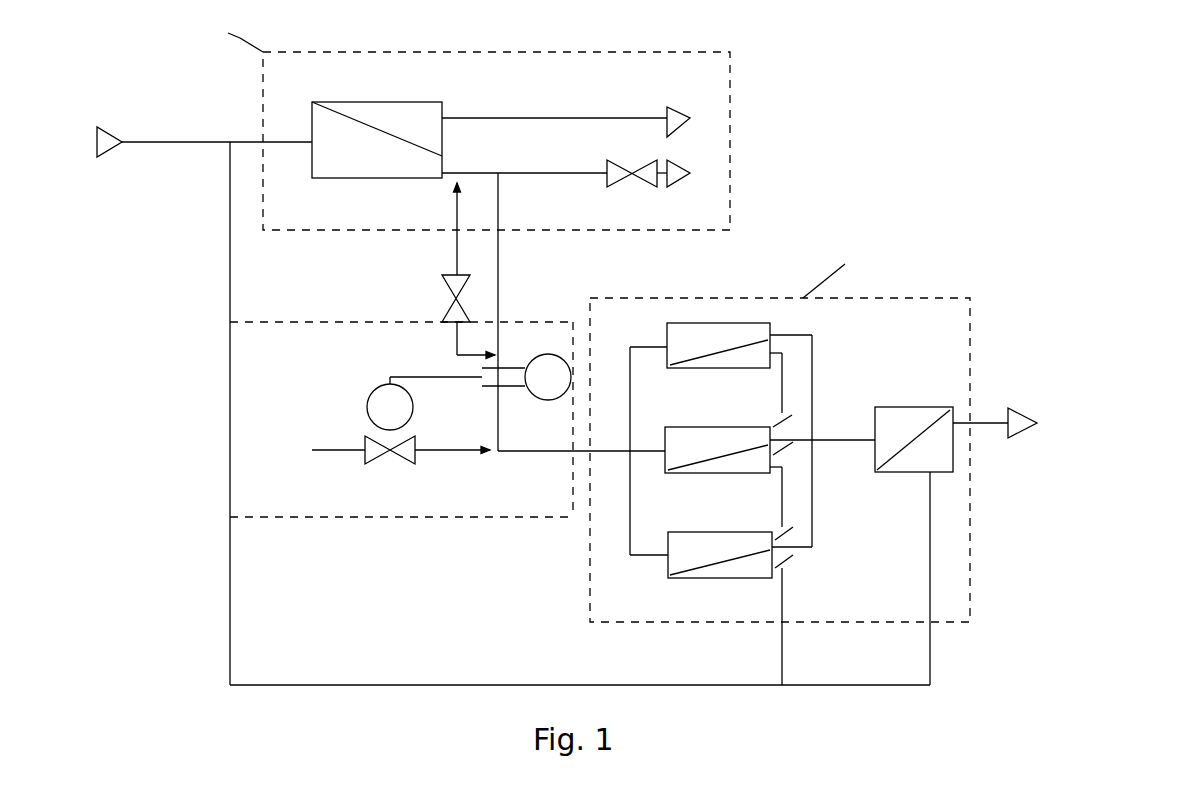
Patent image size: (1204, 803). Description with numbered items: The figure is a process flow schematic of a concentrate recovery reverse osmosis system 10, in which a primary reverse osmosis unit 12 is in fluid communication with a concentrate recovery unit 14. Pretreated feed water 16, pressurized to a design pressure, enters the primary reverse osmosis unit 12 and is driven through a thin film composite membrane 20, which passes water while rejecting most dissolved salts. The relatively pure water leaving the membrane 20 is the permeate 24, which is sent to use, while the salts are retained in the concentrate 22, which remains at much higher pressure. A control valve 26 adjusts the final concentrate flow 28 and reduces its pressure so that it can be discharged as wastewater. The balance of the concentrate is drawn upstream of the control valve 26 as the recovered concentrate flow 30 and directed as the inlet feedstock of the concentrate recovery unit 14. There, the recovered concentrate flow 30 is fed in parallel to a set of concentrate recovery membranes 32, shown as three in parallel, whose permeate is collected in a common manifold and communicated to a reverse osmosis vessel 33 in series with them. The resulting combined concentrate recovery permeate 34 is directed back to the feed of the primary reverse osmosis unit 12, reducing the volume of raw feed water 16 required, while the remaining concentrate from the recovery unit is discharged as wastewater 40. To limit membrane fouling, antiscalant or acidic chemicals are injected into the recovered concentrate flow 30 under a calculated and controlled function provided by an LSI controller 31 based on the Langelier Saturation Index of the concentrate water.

The concentrate recovery reverse osmosis system 10 is at (143, 555).
The primary reverse osmosis unit 12 is at (733, 62).
The concentrate recovery unit 14 is at (973, 536).
The feed water inlet 16 is at (184, 142).
The thin film composite membrane 20 is at (377, 120).
The concentrate 22 is at (462, 119).
The permeate 24 is at (697, 121).
The control valve 26 is at (559, 195).
The final concentrate flow 28 is at (697, 175).
The recovered concentrate flow 30 is at (581, 312).
The LSI controller 31 is at (340, 520).
The concentrate recovery membranes 32 is at (748, 333).
The reverse osmosis vessel 33 is at (906, 403).
The combined concentrate recovery permeate 34 is at (580, 578).
The wastewater 40 is at (1019, 423).